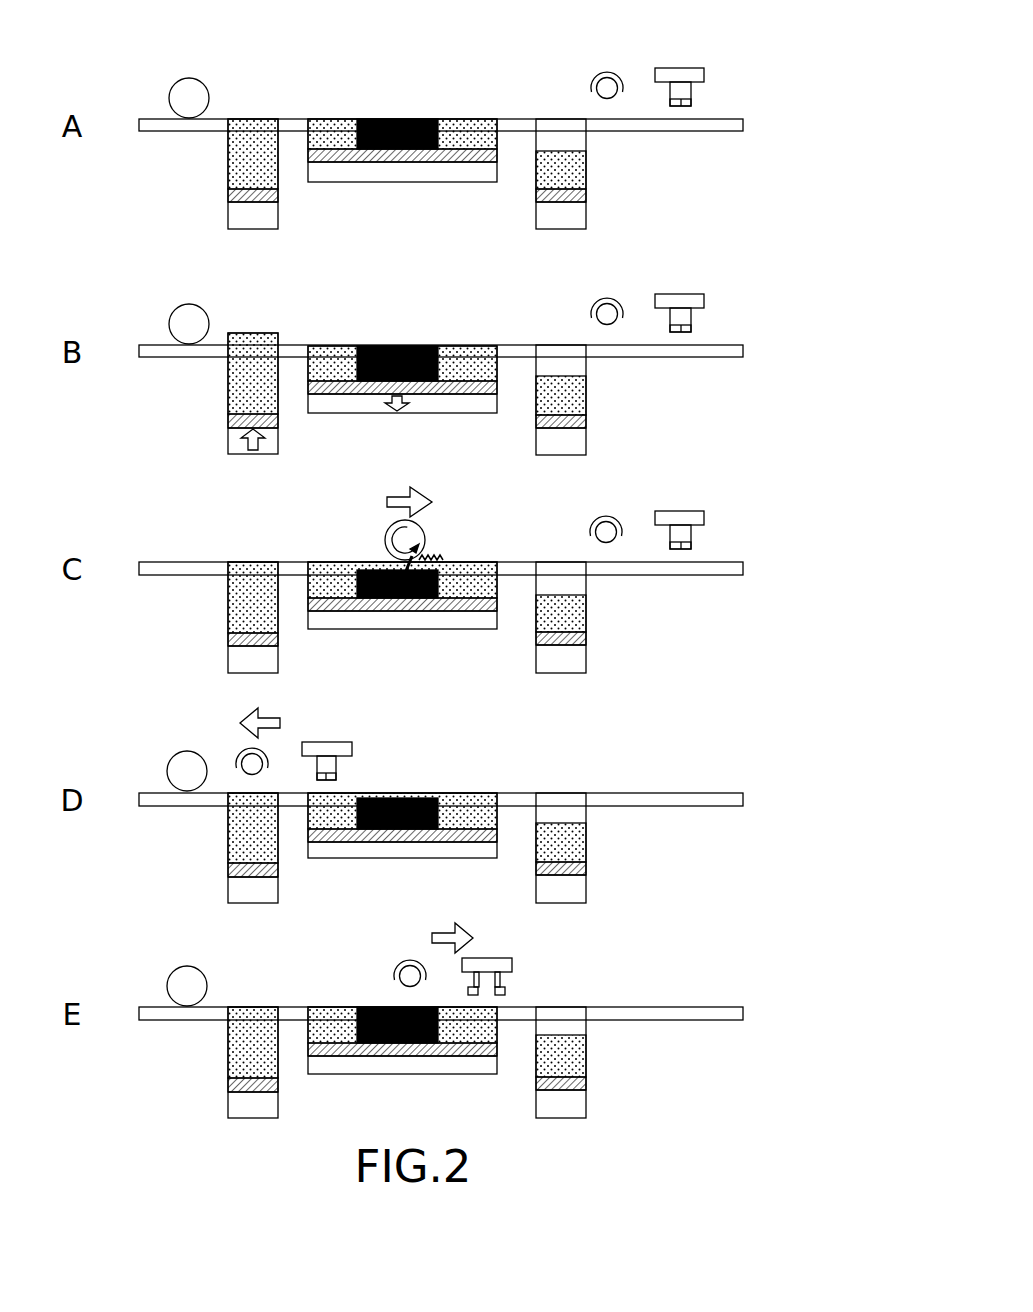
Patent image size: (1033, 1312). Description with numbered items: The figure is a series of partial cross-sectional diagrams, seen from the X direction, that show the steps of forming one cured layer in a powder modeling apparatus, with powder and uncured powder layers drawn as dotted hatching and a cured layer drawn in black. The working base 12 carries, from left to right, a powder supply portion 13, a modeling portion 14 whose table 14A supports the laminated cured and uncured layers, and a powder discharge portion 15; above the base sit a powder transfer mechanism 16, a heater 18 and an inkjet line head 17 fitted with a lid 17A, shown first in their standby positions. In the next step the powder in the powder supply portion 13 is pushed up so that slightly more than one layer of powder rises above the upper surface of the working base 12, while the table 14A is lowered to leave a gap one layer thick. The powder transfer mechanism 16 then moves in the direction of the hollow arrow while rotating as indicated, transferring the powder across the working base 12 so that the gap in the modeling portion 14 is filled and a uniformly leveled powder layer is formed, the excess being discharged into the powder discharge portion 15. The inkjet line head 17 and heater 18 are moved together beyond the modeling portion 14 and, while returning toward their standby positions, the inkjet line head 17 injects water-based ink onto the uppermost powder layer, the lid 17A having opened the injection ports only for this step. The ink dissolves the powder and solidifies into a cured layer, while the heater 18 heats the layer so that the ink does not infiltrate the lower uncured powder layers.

The working base 12 is at (730, 132).
The powder supply portion 13 is at (267, 214).
The modeling portion 14 is at (395, 164).
The table 14A is at (462, 162).
The powder discharge portion 15 is at (578, 213).
The powder transfer mechanism 16 is at (190, 78).
The inkjet line head 17 is at (681, 66).
The lid 17A is at (690, 111).
The heater 18 is at (604, 71).